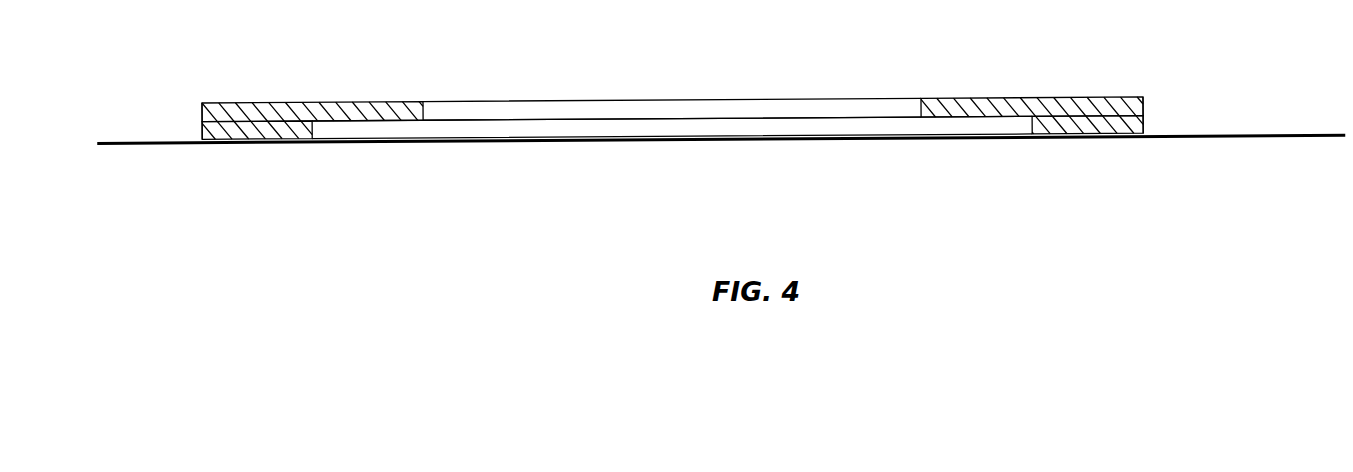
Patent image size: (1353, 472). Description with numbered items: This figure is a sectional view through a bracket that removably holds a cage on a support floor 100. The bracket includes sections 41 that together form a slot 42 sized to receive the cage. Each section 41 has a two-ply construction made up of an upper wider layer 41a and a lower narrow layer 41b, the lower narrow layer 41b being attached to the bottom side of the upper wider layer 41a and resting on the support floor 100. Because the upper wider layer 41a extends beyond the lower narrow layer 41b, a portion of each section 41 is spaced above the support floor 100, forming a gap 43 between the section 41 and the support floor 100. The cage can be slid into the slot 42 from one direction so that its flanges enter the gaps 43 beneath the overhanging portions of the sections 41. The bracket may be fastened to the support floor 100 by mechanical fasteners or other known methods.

The section 41 is at (647, 113).
The upper wider layer 41a is at (318, 109).
The lower narrow layer 41b is at (221, 133).
The slot 42 is at (657, 129).
The gap 43 is at (342, 132).
The support floor 100 is at (1326, 168).